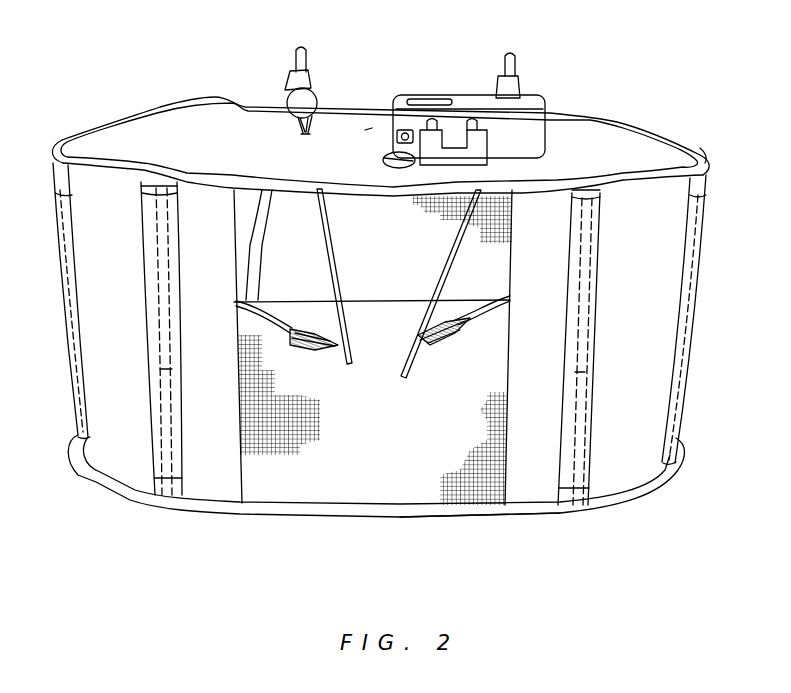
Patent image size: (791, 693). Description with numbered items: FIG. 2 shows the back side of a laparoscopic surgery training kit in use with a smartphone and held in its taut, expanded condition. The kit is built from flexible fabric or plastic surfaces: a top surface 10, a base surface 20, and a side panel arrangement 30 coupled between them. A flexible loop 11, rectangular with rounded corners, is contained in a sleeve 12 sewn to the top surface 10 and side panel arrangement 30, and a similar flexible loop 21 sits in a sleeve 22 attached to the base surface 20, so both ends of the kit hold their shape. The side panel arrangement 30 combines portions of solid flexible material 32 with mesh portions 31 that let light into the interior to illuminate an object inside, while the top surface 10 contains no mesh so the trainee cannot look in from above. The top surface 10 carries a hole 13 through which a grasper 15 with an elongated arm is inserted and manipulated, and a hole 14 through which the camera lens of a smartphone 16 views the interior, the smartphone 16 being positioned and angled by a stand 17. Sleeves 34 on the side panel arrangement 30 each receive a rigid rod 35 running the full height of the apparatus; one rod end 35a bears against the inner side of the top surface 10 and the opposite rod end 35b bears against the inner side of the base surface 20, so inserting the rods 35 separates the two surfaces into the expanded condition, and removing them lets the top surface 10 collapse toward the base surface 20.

The top surface 10 is at (370, 125).
The flexible loop 11 is at (658, 140).
The sleeve 12 is at (700, 148).
The hole 13 is at (312, 112).
The hole 14 is at (383, 160).
The grasper 15 is at (290, 77).
The smartphone 16 is at (530, 100).
The stand 17 is at (487, 143).
The base surface 20 is at (330, 479).
The flexible loop 21 is at (683, 468).
The sleeve 22 is at (666, 493).
The side panel arrangement 30 is at (706, 305).
The mesh portion 31 is at (380, 290).
The solid flexible material portion 32 is at (95, 318).
The sleeve 34 is at (163, 270).
The rod 35 is at (156, 372).
The rod end 35a is at (157, 186).
The rod end 35b is at (167, 488).